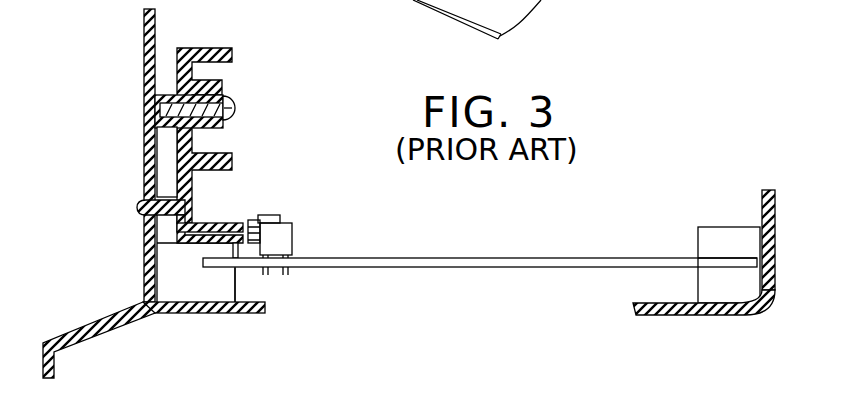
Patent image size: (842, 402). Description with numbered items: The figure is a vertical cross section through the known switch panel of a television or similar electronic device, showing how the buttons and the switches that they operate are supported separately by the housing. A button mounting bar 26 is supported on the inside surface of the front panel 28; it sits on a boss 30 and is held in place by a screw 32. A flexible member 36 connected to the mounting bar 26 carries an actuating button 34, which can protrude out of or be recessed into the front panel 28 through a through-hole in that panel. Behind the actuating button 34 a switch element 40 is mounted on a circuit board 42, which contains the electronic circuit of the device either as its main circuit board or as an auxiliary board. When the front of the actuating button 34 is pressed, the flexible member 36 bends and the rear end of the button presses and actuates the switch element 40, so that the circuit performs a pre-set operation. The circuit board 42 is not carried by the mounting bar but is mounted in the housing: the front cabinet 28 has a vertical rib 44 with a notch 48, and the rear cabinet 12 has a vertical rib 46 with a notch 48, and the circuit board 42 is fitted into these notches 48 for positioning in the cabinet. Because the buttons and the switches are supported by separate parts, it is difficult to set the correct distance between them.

The rear cabinet 12 is at (426, 19).
The button mounting bar 26 is at (207, 48).
The front panel 28 is at (143, 32).
The boss 30 is at (163, 97).
The screw 32 is at (236, 100).
The actuating button 34 is at (207, 220).
The flexible member 36 is at (186, 183).
The switch element 40 is at (290, 243).
The circuit board 42 is at (453, 258).
The notched rib 44 is at (206, 297).
The notched rib 46 is at (717, 227).
The notch 48 is at (238, 268).